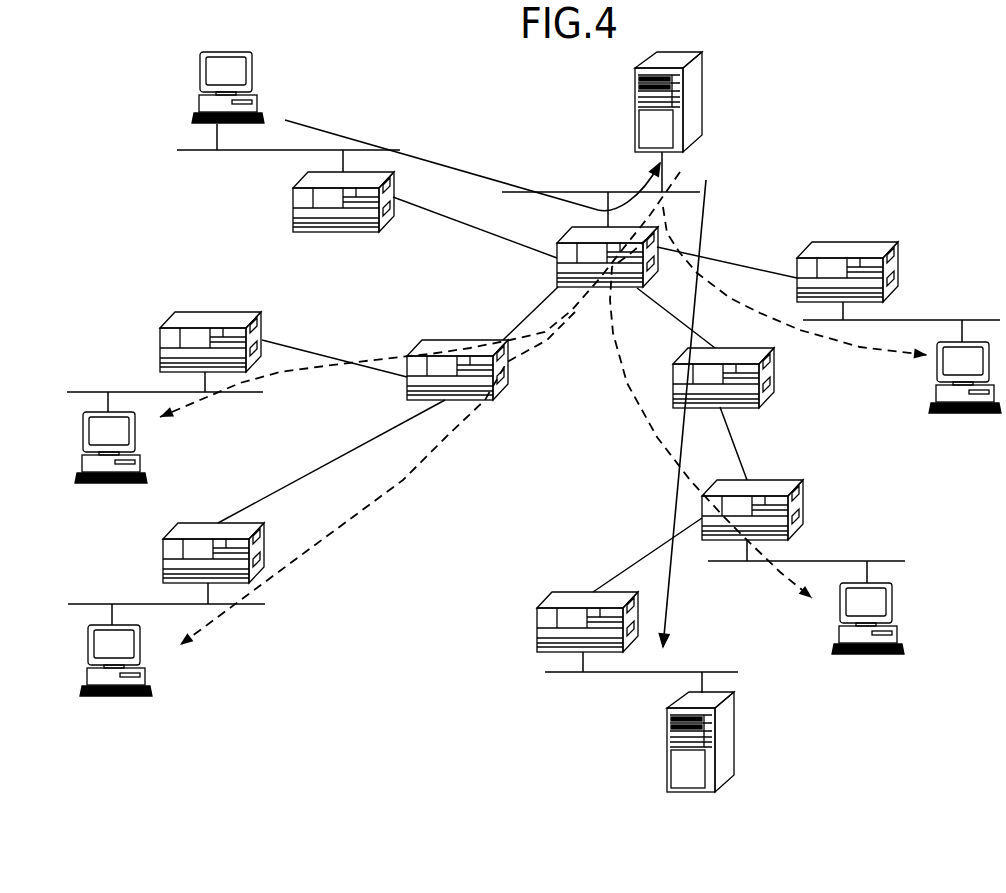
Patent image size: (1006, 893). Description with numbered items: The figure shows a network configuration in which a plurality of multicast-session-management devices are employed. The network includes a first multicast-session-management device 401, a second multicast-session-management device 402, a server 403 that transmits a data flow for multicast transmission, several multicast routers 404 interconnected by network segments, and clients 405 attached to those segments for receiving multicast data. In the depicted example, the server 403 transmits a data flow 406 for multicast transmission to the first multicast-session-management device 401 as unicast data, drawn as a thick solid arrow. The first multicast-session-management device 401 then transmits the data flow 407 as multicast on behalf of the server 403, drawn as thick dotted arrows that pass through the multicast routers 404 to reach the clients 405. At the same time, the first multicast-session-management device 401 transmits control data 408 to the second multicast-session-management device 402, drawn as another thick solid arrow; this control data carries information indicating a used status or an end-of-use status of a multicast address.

The first multicast-session-management device 401 is at (816, 116).
The second multicast-session-management device 402 is at (749, 758).
The server 403 is at (184, 101).
The multicast routers 404 is at (505, 411).
The clients 405 is at (538, 524).
The data flow 406 is at (452, 160).
The data flow 407 is at (278, 592).
The control data 408 is at (676, 577).